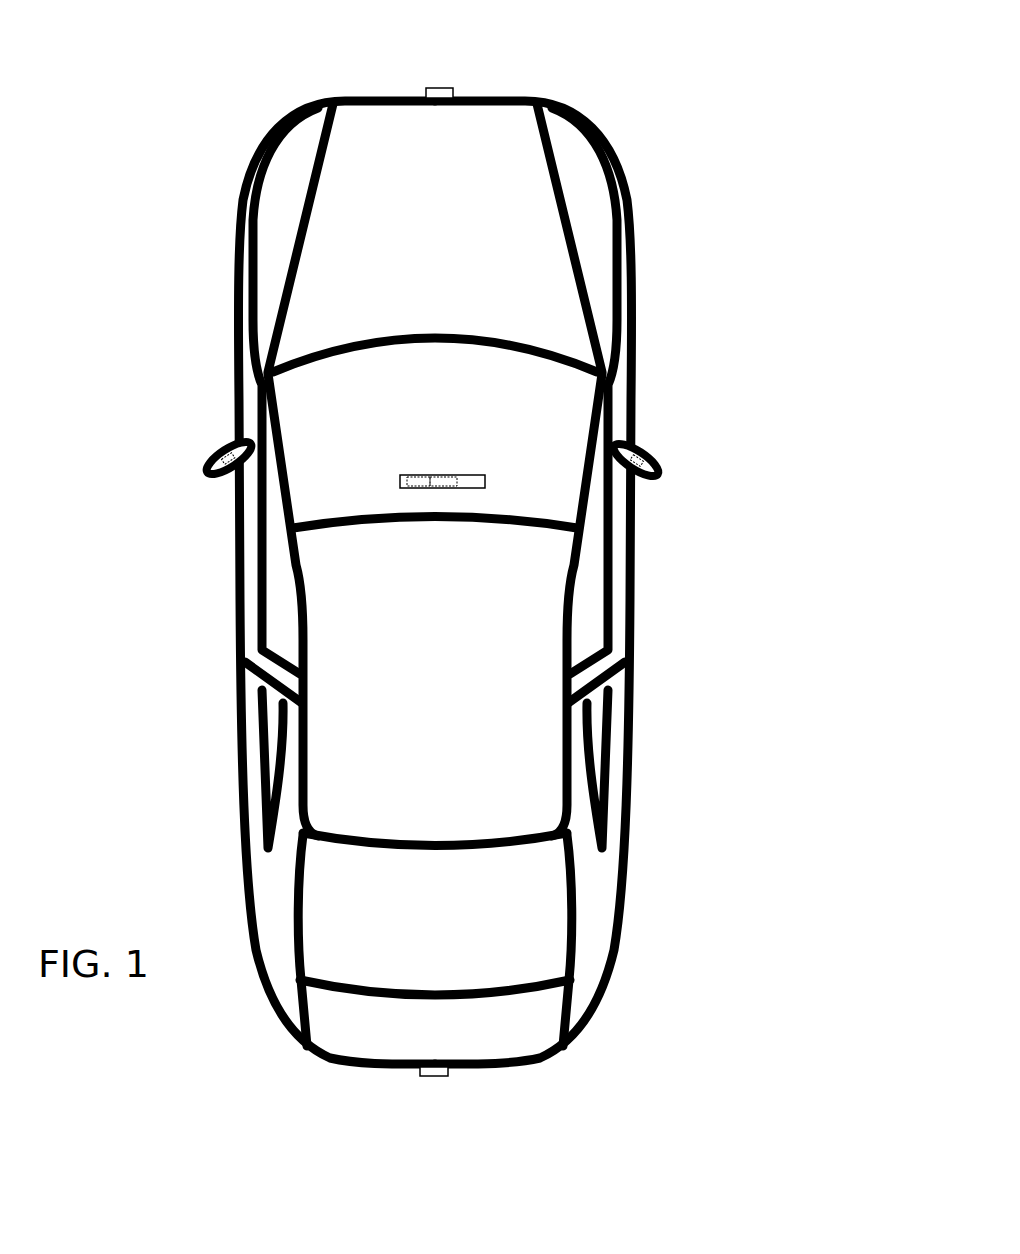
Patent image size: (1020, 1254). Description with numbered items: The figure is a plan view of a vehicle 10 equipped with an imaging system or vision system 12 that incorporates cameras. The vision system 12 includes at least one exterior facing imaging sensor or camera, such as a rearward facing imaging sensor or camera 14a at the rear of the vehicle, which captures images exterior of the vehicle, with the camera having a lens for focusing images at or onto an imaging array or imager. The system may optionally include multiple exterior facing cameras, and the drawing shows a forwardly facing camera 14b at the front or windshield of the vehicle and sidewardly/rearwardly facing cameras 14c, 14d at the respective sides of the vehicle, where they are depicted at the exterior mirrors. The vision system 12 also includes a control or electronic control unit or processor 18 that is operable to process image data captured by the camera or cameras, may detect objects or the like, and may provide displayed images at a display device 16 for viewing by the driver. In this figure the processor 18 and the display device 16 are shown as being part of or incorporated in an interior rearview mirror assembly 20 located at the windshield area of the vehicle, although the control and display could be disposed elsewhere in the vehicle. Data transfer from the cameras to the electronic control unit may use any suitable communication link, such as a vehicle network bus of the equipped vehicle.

The vehicle 10 is at (180, 184).
The vision system 12 is at (375, 1102).
The rearward facing camera 14a is at (437, 1073).
The forwardly facing camera 14b is at (442, 88).
The sidewardly/rearwardly facing camera 14c is at (220, 453).
The sidewardly/rearwardly facing camera 14d is at (643, 457).
The display device 16 is at (417, 480).
The electronic control unit 18 is at (440, 477).
The interior rearview mirror assembly 20 is at (487, 475).